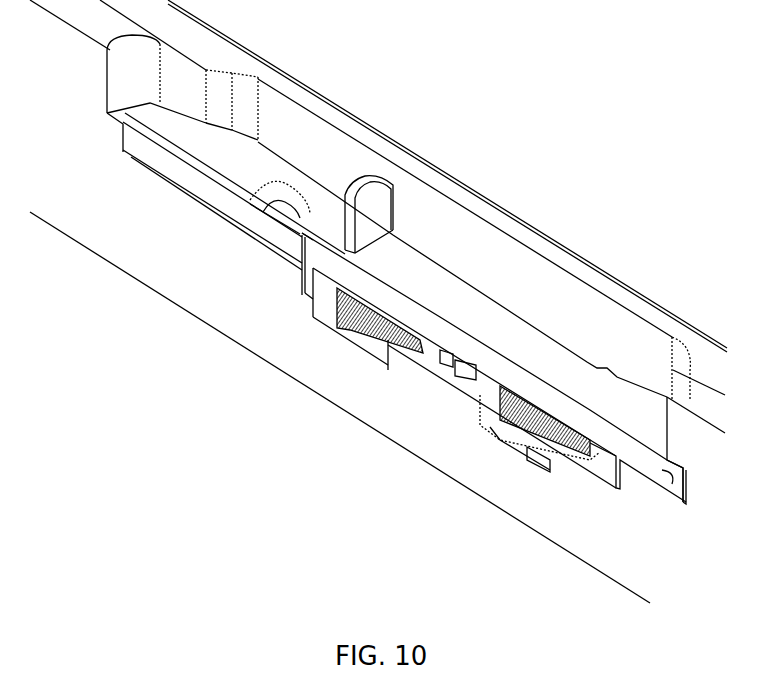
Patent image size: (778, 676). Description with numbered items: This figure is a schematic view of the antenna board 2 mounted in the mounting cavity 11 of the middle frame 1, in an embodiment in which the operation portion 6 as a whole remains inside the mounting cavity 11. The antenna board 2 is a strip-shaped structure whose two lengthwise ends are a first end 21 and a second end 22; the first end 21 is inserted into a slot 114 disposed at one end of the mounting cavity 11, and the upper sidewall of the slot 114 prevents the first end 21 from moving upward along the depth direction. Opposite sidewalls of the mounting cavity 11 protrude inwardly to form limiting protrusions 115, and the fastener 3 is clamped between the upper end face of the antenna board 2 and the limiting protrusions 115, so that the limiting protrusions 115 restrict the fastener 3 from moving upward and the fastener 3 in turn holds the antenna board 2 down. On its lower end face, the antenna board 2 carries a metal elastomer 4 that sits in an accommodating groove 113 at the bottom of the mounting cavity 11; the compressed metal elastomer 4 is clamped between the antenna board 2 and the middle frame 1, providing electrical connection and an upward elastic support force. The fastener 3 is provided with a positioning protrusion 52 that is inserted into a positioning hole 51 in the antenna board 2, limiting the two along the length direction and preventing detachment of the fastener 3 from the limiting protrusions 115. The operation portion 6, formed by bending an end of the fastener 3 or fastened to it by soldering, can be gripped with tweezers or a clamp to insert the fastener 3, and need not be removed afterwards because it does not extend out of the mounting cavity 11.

The middle frame 1 is at (343, 387).
The antenna board 2 is at (432, 290).
The fastener 3 is at (255, 160).
The metal elastomer 4 is at (500, 394).
The operation portion 6 is at (373, 203).
The mounting cavity 11 is at (548, 292).
The first end 21 is at (682, 497).
The second end 22 is at (145, 150).
The positioning hole 51 is at (288, 242).
The positioning protrusion 52 is at (257, 223).
The accommodating groove 113 is at (537, 447).
The slot 114 is at (667, 493).
The limiting protrusion 115 is at (210, 77).